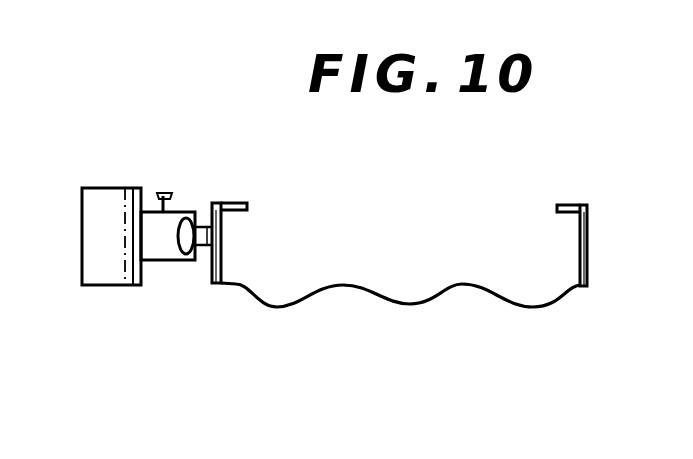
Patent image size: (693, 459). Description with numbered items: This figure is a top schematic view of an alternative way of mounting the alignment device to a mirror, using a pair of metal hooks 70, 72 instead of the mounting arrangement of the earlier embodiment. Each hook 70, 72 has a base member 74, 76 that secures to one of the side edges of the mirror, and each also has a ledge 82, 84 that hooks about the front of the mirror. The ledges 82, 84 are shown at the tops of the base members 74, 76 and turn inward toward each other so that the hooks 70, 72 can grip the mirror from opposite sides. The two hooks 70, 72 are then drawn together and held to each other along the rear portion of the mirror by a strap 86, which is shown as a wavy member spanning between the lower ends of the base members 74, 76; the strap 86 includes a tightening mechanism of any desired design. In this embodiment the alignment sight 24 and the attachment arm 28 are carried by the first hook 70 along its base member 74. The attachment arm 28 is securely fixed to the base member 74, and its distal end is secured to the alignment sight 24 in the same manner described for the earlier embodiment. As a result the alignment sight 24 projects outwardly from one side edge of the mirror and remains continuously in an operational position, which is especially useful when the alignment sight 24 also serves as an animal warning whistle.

The alignment sight 24 is at (105, 268).
The attachment arm 28 is at (207, 238).
The hook 70 is at (250, 204).
The hook 72 is at (590, 224).
The base member 74 is at (220, 257).
The base member 76 is at (588, 232).
The ledge 82 is at (243, 202).
The ledge 84 is at (572, 203).
The strap 86 is at (522, 308).